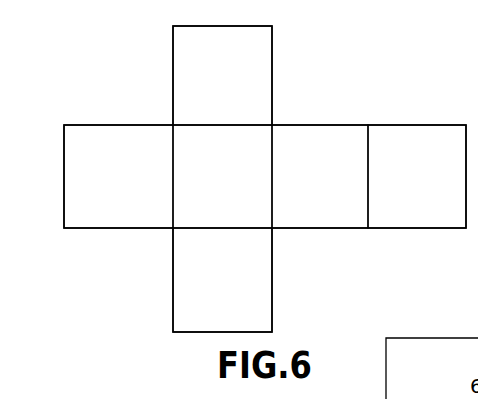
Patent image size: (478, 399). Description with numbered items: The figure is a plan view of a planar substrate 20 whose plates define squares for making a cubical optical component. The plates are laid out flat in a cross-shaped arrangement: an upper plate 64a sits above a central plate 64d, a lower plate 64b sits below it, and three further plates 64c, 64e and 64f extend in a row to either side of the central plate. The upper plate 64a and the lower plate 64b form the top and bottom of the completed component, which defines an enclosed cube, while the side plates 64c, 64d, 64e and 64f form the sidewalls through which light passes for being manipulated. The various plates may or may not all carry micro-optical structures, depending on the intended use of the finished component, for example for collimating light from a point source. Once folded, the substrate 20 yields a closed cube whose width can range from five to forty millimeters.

The planar substrate 20 is at (107, 95).
The upper plate 64a is at (245, 86).
The lower plate 64b is at (247, 294).
The side plate 64c is at (130, 187).
The side plate 64d is at (245, 187).
The side plate 64e is at (345, 187).
The side plate 64f is at (445, 187).